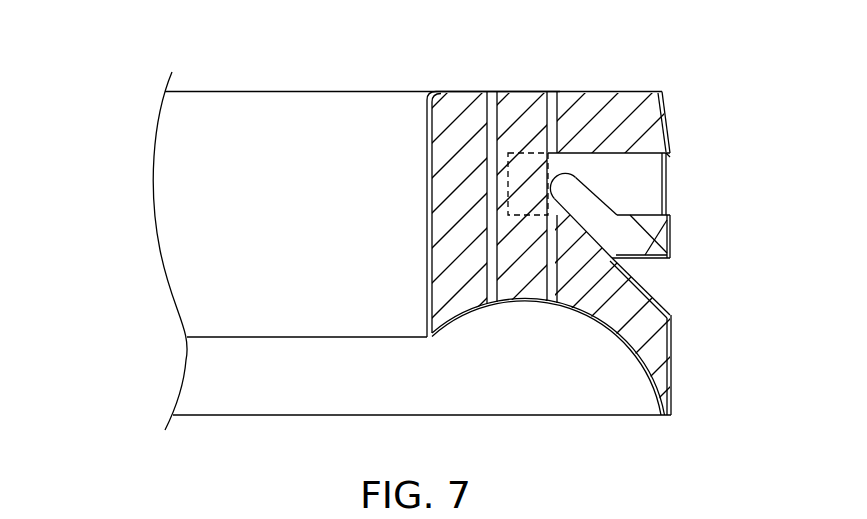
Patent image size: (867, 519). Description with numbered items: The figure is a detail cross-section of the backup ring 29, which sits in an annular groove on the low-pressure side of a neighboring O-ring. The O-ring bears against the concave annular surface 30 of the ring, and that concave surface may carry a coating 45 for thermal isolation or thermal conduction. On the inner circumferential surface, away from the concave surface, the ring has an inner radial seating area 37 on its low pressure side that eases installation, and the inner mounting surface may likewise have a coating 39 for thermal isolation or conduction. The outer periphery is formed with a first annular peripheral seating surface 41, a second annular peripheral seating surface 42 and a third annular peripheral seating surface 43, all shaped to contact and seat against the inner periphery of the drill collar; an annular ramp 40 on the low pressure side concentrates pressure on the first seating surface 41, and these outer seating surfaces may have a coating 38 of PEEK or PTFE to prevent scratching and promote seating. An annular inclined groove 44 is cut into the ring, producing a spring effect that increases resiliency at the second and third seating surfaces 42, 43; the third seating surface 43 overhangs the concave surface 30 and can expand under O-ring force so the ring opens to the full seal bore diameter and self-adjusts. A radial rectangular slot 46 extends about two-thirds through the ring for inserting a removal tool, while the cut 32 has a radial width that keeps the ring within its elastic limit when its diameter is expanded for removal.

The backup ring 29 is at (630, 40).
The concave annular surface 30 is at (588, 323).
The cut 32 is at (490, 92).
The inner radial seating area 37 is at (434, 92).
The coating 38 is at (671, 340).
The coating 39 is at (430, 185).
The annular ramp 40 is at (666, 108).
The first annular peripheral seating surface 41 is at (670, 150).
The second annular peripheral seating surface 42 is at (672, 234).
The third annular peripheral seating surface 43 is at (672, 383).
The annular inclined groove 44 is at (670, 292).
The coating 45 is at (628, 355).
The radial rectangular slot 46 is at (675, 182).